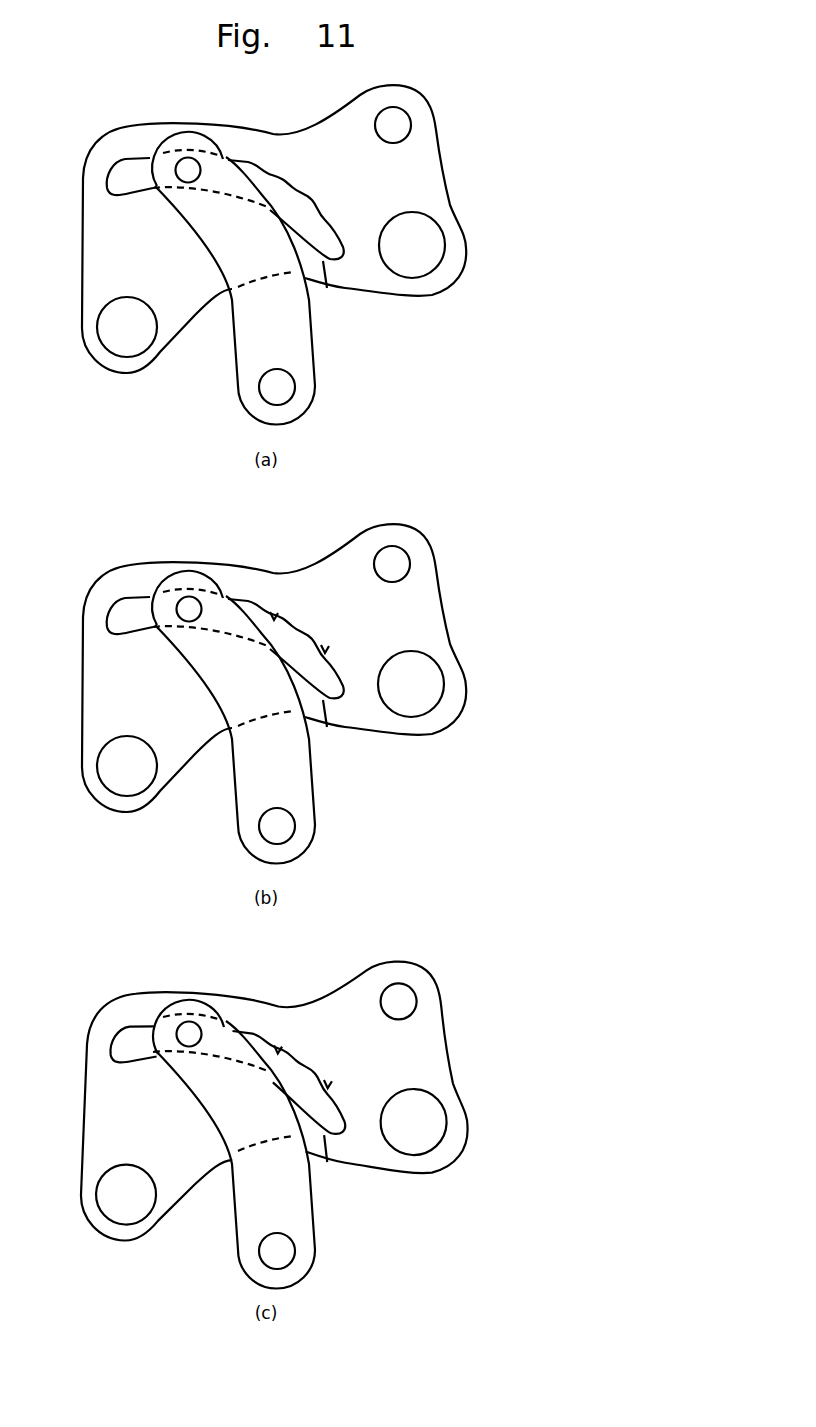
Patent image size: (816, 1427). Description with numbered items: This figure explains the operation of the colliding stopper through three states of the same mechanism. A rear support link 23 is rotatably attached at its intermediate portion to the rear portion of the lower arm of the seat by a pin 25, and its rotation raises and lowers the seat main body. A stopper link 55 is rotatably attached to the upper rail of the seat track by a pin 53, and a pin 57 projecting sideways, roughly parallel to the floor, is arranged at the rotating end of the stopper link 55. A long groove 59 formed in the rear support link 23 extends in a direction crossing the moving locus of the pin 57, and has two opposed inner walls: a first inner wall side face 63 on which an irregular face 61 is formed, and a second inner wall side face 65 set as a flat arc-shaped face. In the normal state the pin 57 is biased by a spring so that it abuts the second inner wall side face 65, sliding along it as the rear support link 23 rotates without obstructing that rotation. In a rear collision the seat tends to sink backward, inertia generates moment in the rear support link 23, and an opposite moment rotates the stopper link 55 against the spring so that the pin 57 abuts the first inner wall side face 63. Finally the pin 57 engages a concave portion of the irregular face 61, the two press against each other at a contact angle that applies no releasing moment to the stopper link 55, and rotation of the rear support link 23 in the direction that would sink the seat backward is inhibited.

The rear support link 23 is at (366, 283).
The pin 25 is at (432, 226).
The pin 53 is at (288, 387).
The stopper link 55 is at (247, 355).
The pin 57 is at (203, 176).
The long groove 59 is at (327, 288).
The irregular face 61 is at (306, 547).
The first inner wall side face 63 is at (350, 574).
The second inner wall side face 65 is at (124, 187).